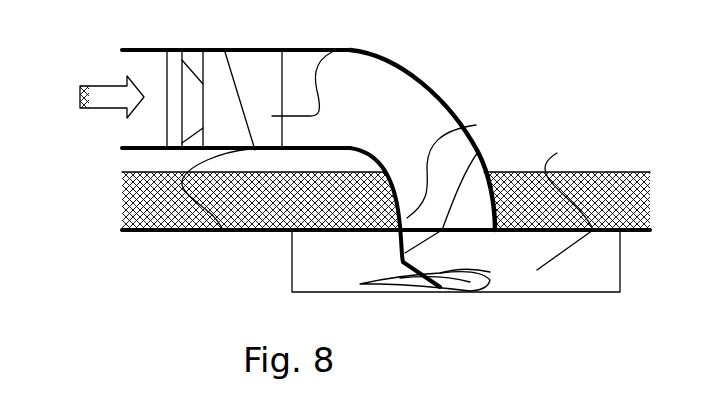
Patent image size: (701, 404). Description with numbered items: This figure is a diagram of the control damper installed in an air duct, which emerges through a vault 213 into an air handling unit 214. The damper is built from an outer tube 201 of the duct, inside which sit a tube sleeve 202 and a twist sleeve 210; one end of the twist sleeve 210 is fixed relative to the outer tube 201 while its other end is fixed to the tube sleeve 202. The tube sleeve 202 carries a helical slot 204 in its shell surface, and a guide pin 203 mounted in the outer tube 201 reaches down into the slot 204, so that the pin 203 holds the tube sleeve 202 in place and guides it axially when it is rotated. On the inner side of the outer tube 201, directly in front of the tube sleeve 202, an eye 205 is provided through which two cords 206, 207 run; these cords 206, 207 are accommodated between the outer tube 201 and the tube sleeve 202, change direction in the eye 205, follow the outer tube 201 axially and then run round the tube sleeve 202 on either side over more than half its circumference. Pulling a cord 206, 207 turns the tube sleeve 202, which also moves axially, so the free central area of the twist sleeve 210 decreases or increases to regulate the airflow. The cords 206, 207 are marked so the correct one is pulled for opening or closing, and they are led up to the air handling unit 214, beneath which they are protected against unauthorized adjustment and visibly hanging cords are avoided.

The outer tube 201 is at (137, 48).
The twist sleeve 210 is at (197, 52).
The cord 207 is at (225, 50).
The guide pin 203 is at (243, 87).
The helical slot 204 is at (305, 70).
The tube sleeve 202 is at (343, 50).
The cord 206 is at (440, 129).
The vault 213 is at (138, 207).
The eye 205 is at (213, 235).
The air handling unit 214 is at (557, 153).